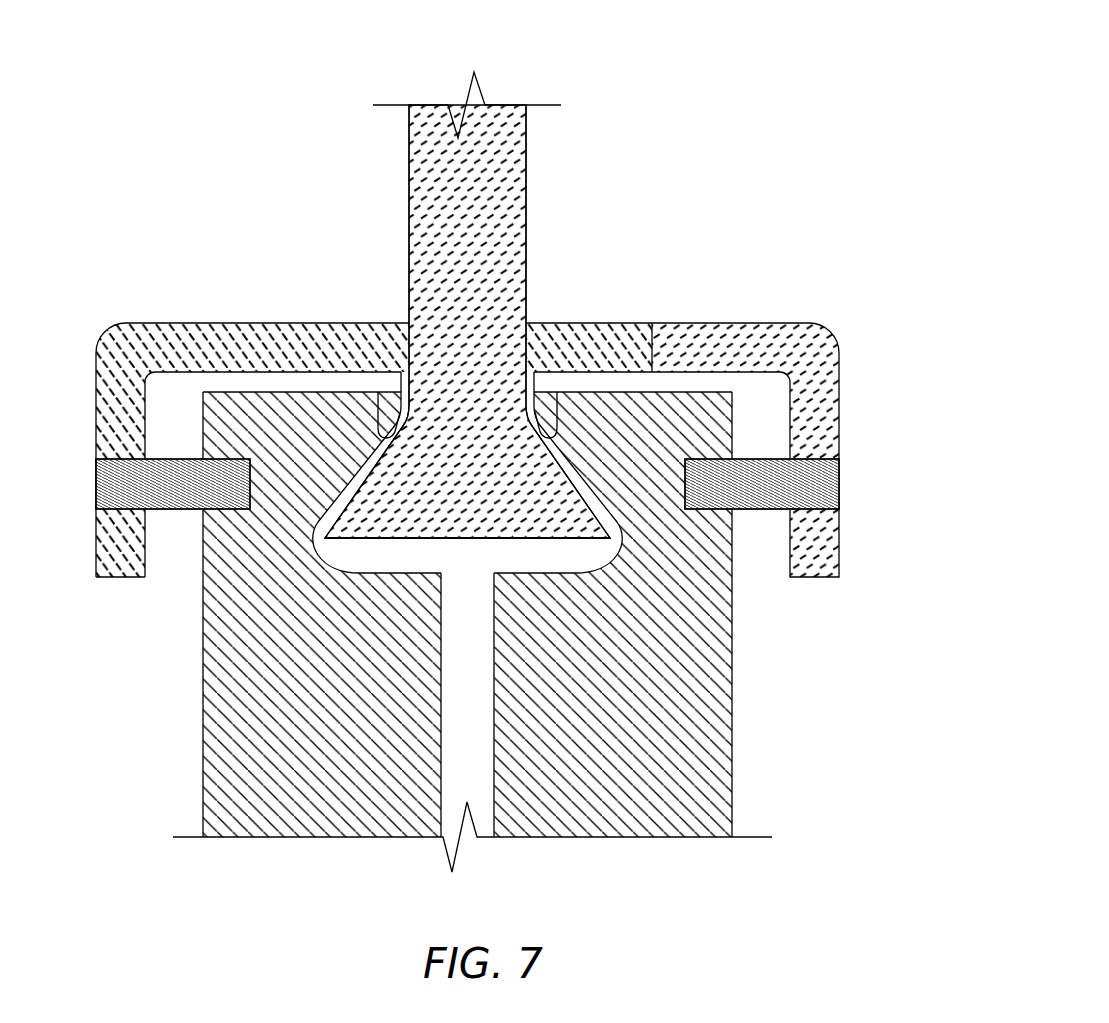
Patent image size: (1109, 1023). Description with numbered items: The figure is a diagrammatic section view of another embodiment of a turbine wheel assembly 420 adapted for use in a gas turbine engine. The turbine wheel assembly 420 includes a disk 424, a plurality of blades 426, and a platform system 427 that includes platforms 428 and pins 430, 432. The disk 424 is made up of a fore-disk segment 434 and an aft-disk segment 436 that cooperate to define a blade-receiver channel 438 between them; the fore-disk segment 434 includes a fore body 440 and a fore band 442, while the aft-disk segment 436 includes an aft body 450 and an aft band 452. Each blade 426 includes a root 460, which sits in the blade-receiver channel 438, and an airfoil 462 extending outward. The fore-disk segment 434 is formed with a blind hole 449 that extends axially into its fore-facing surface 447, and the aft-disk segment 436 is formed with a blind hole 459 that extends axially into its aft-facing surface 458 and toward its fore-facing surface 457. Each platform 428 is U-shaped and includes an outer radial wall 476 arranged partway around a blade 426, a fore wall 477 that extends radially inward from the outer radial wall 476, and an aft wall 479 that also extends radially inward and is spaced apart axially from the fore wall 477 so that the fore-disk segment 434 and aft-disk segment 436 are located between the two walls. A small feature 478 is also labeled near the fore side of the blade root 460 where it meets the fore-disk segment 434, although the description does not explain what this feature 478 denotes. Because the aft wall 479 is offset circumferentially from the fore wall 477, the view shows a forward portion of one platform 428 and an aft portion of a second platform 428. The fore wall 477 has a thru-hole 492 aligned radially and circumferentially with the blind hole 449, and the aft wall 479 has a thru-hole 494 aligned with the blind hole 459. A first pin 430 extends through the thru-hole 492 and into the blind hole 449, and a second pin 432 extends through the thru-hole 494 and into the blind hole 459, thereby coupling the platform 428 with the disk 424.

The turbine wheel assembly 420 is at (706, 81).
The disk 424 is at (178, 803).
The blade 426 is at (541, 142).
The platform system 427 is at (120, 290).
The platform 428 is at (230, 318).
The first pin 430 is at (95, 490).
The second pin 432 is at (845, 479).
The fore-disk segment 434 is at (199, 748).
The aft-disk segment 436 is at (737, 763).
The blade-receiver channel 438 is at (480, 549).
The fore body 440 is at (199, 818).
The fore band 442 is at (199, 395).
The fore-facing surface 447 is at (201, 535).
The blind hole 449 is at (227, 510).
The aft body 450 is at (737, 797).
The aft band 452 is at (658, 388).
The fore-facing surface 457 is at (548, 440).
The aft-facing surface 458 is at (737, 418).
The blind hole 459 is at (698, 509).
The root 460 is at (512, 549).
The airfoil 462 is at (529, 170).
The outer radial wall 476 is at (318, 318).
The fore wall 477 is at (95, 437).
The left sleeve notch 478 is at (384, 430).
The aft wall 479 is at (845, 418).
The thru-hole 492 is at (113, 509).
The thru-hole 494 is at (810, 509).